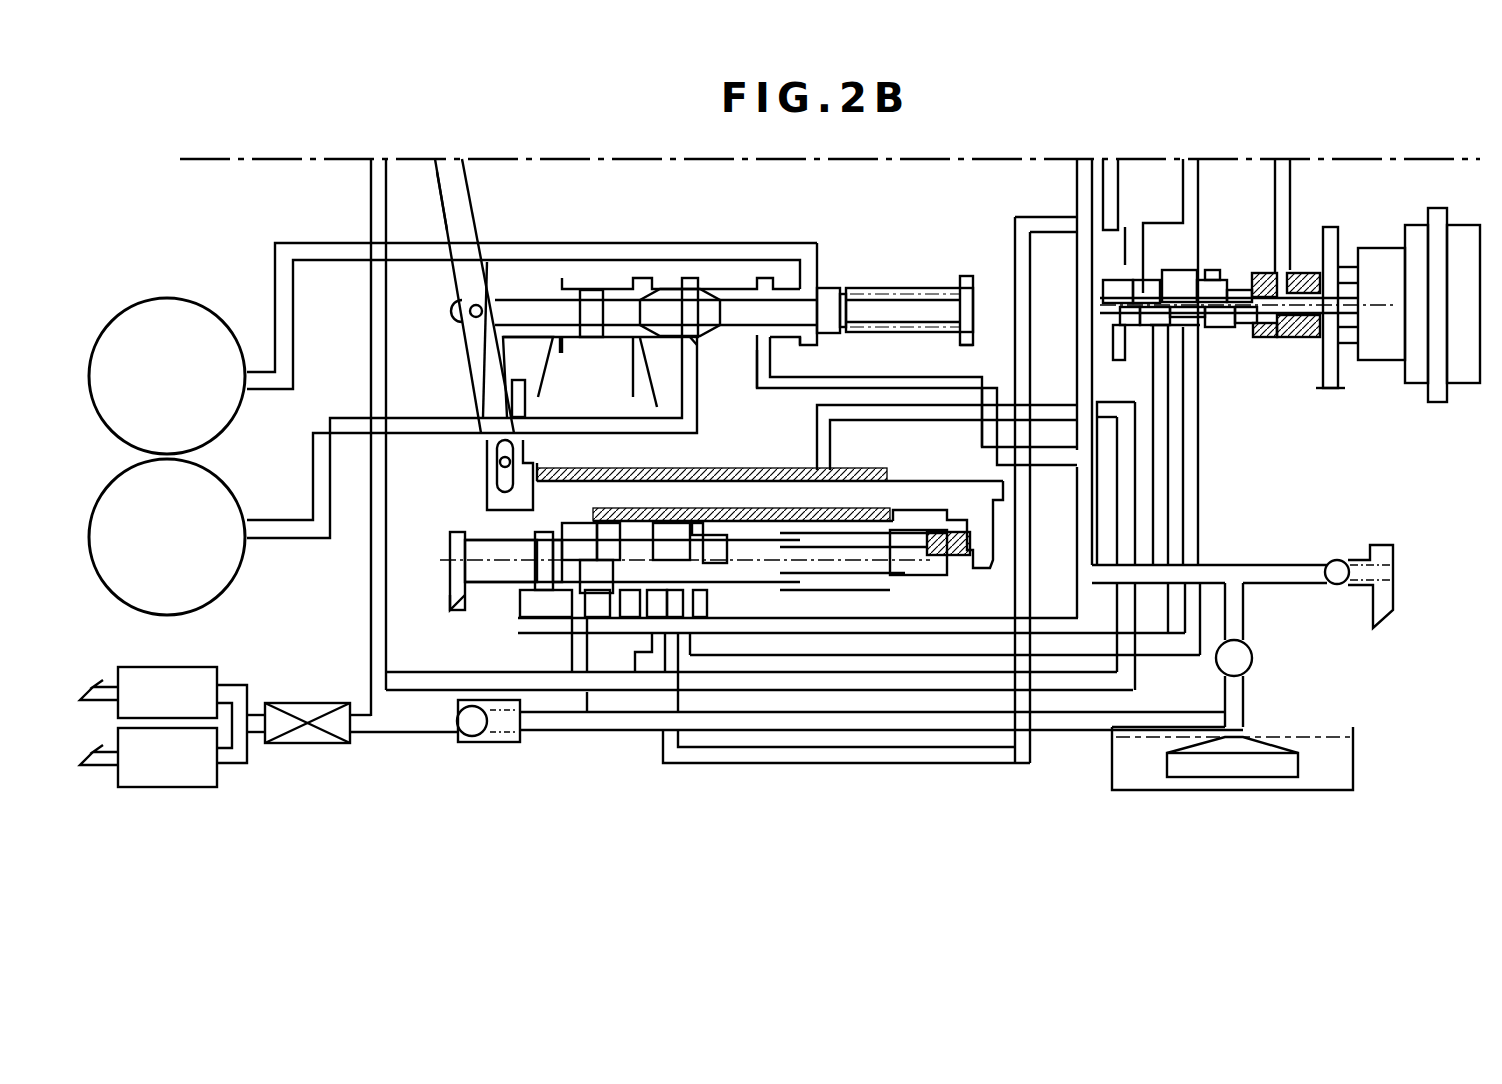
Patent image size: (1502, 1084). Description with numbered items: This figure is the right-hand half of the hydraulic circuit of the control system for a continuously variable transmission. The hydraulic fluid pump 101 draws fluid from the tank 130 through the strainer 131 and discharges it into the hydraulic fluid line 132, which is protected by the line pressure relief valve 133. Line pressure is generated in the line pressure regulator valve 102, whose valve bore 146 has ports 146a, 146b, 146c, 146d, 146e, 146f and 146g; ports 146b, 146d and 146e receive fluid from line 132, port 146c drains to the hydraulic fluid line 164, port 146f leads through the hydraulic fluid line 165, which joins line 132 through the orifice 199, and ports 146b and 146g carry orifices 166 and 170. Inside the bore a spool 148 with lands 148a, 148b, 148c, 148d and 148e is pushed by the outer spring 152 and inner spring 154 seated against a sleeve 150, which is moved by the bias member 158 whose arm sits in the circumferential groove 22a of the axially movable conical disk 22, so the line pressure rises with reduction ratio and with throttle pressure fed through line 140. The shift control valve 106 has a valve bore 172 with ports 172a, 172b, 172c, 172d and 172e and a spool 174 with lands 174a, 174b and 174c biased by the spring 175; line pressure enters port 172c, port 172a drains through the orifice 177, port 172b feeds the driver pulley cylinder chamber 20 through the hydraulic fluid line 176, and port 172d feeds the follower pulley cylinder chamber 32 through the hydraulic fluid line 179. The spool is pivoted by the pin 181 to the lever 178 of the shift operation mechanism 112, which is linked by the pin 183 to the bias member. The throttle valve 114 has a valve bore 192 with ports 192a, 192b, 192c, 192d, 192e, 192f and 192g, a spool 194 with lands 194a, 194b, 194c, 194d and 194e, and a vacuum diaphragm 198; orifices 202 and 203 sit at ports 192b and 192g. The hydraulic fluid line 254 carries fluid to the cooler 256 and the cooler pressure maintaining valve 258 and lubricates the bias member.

The driver pulley cylinder chamber 20 is at (230, 590).
The axially movable conical disk 22 is at (545, 362).
The circumferential groove 22a is at (528, 392).
The follower pulley cylinder chamber 32 is at (228, 430).
The hydraulic fluid pump 101 is at (1256, 653).
The line pressure regulator valve 102 is at (455, 638).
The shift control valve 106 is at (836, 242).
The shift operation mechanism 112 is at (447, 340).
The throttle valve 114 is at (1272, 406).
The tank 130 is at (1356, 745).
The strainer 131 is at (1250, 740).
The hydraulic fluid line 132 is at (880, 625).
The line pressure relief valve 133 is at (1343, 560).
The hydraulic fluid line 140 is at (1168, 647).
The valve bore 146 is at (527, 577).
The port 146a is at (460, 590).
The port 146b is at (513, 612).
The port 146c is at (572, 597).
The port 146d is at (580, 620).
The port 146e is at (612, 620).
The port 146f is at (688, 600).
The port 146g is at (708, 510).
The spool 148 is at (458, 573).
The land 148a is at (487, 577).
The land 148b is at (458, 553).
The land 148c is at (598, 577).
The land 148d is at (667, 570).
The land 148e is at (710, 580).
The sleeve 150 is at (913, 565).
The outer spring 152 is at (815, 470).
The inner spring 154 is at (908, 550).
The bias member 158 is at (1000, 487).
The hydraulic fluid line 164 is at (582, 713).
The hydraulic fluid line 165 is at (725, 753).
The orifice 166 is at (520, 628).
The orifice 170 is at (705, 603).
The valve bore 172 is at (893, 288).
The port 172a is at (640, 338).
The port 172b is at (690, 338).
The port 172c is at (766, 362).
The port 172d is at (807, 345).
The port 172e is at (965, 342).
The spool 174 is at (517, 300).
The land 174a is at (591, 300).
The land 174b is at (713, 300).
The land 174c is at (824, 297).
The spring 175 is at (949, 289).
The hydraulic fluid line 176 is at (344, 437).
The orifice 177 is at (645, 382).
The lever 178 is at (445, 205).
The hydraulic fluid line 179 is at (333, 261).
The pin 181 is at (465, 310).
The pin 183 is at (488, 470).
The valve bore 192 is at (1180, 283).
The port 192a is at (1100, 318).
The port 192b is at (1123, 330).
The port 192c is at (1162, 337).
The port 192d is at (1190, 325).
The port 192e is at (1210, 332).
The port 192f is at (1247, 337).
The port 192g is at (1283, 312).
The spool 194 is at (1113, 312).
The land 194a is at (1117, 293).
The land 194b is at (1113, 297).
The land 194c is at (1218, 293).
The land 194d is at (1262, 283).
The land 194e is at (1318, 280).
The vacuum diaphragm 198 is at (1440, 210).
The orifice 199 is at (657, 667).
The orifice 202 is at (1133, 260).
The orifice 203 is at (1293, 215).
The hydraulic fluid line 254 is at (370, 333).
The cooler 256 is at (312, 703).
The cooler pressure maintaining valve 258 is at (458, 735).